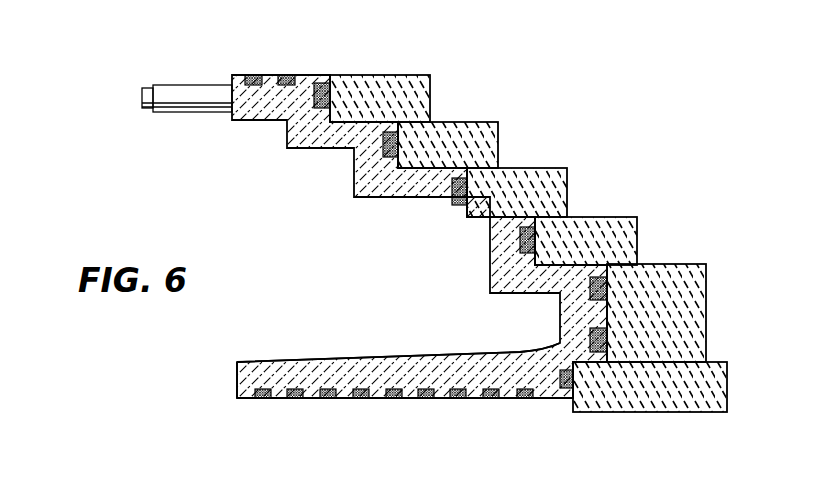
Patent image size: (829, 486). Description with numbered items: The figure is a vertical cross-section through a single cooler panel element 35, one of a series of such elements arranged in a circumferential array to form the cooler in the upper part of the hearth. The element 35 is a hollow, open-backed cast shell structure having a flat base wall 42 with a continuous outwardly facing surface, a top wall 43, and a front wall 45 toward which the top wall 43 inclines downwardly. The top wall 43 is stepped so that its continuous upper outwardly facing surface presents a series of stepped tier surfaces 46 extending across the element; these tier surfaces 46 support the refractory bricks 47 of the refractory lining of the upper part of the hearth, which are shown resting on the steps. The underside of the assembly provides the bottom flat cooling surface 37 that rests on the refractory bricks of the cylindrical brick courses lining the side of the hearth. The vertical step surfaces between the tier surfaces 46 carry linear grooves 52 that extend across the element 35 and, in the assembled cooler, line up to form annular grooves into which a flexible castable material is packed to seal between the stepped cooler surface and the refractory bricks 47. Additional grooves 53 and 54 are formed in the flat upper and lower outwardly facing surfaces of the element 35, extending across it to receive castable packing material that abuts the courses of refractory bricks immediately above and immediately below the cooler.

The cooler panel element 35 is at (548, 77).
The bottom flat cooling surface 37 is at (443, 399).
The base wall 42 is at (407, 360).
The top wall 43 is at (312, 142).
The front wall 45 is at (607, 313).
The stepped tier surface 46 is at (507, 213).
The refractory brick 47 is at (398, 78).
The linear groove 52 is at (400, 140).
The additional groove 53 is at (288, 74).
The additional groove 54 is at (290, 400).